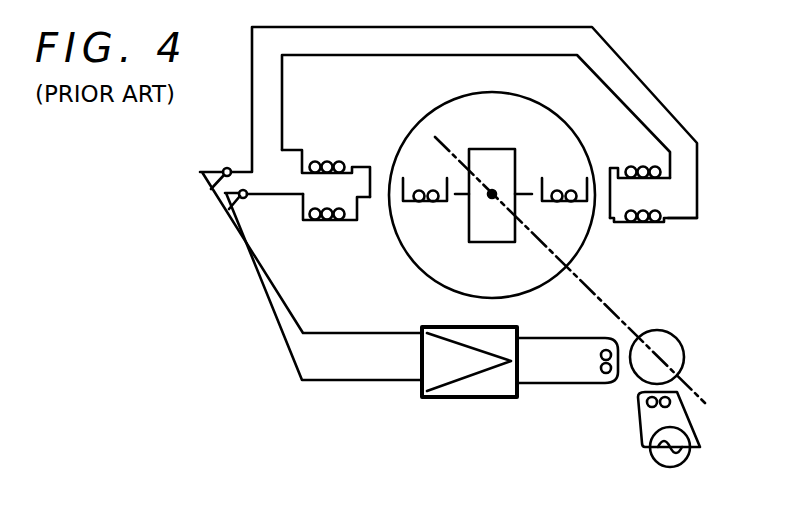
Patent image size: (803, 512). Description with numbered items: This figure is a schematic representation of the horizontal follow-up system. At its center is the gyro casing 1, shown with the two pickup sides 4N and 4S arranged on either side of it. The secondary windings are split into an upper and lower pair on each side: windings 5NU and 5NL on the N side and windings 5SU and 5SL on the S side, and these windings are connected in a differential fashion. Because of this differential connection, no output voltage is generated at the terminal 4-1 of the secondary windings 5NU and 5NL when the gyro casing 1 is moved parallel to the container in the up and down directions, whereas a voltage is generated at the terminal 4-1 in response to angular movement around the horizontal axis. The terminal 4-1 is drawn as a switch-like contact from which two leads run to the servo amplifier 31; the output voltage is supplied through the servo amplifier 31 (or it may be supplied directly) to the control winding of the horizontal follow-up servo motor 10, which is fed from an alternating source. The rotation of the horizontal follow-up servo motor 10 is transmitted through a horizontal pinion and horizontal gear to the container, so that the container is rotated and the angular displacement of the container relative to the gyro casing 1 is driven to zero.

The gyro casing 1 is at (414, 260).
The primary side 4N is at (418, 185).
The primary side 4S is at (567, 185).
The terminal 4-1 is at (210, 172).
The winding 5NU is at (326, 160).
The winding 5NL is at (330, 226).
The winding 5SU is at (648, 182).
The winding 5SL is at (640, 232).
The servo amplifier 31 is at (458, 400).
The horizontal follow-up servo motor 10 is at (682, 348).